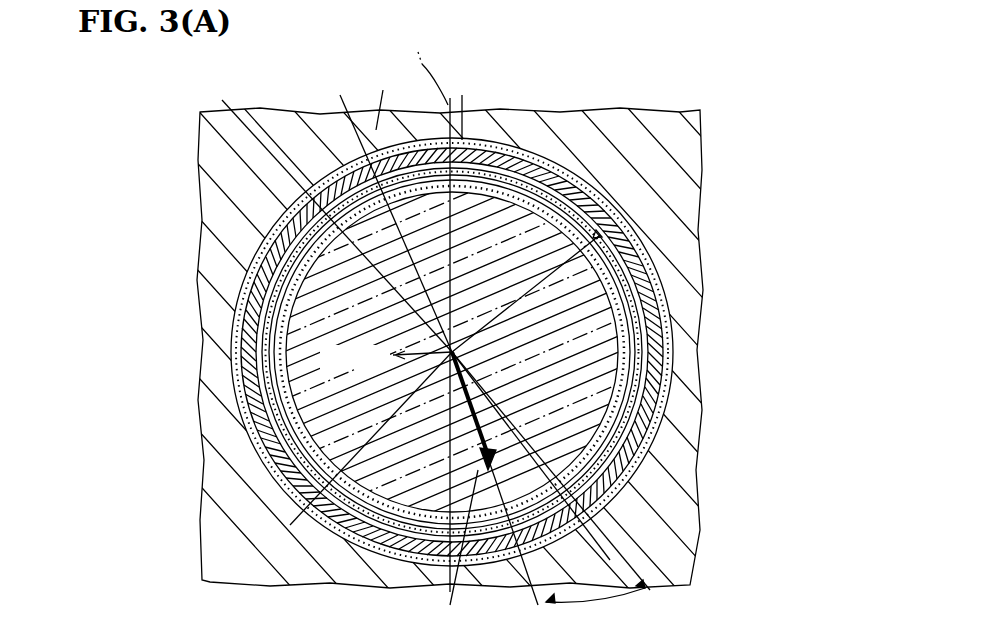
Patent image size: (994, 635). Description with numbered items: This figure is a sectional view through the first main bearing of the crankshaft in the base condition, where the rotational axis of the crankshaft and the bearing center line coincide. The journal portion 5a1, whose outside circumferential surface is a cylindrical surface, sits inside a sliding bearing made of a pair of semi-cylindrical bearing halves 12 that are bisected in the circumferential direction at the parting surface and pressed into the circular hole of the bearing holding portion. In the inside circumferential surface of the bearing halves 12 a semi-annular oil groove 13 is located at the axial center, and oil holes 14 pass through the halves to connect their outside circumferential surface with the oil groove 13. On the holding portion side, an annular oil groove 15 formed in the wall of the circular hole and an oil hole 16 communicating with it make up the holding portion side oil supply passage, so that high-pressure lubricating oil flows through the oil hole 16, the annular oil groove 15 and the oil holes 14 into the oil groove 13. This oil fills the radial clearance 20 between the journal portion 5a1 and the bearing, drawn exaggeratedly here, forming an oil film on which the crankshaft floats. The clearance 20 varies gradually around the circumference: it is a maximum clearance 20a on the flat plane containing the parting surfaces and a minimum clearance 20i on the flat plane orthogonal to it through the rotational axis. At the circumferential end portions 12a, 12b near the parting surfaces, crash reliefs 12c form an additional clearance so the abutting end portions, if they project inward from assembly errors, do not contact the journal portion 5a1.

The oil holes 14 is at (202, 122).
The journal portion 5a1 is at (612, 362).
The bearing halves 12 is at (250, 418).
The oil groove 13 is at (557, 140).
The annular oil groove 15 is at (660, 396).
The oil hole 16 is at (352, 168).
The radial clearance 20 is at (320, 300).
The minimum clearance 20i is at (335, 238).
The maximum clearance 20a is at (662, 298).
The circumferential end portions 12a is at (260, 480).
The circumferential end portions 12b is at (625, 198).
The crash reliefs 12c is at (610, 195).